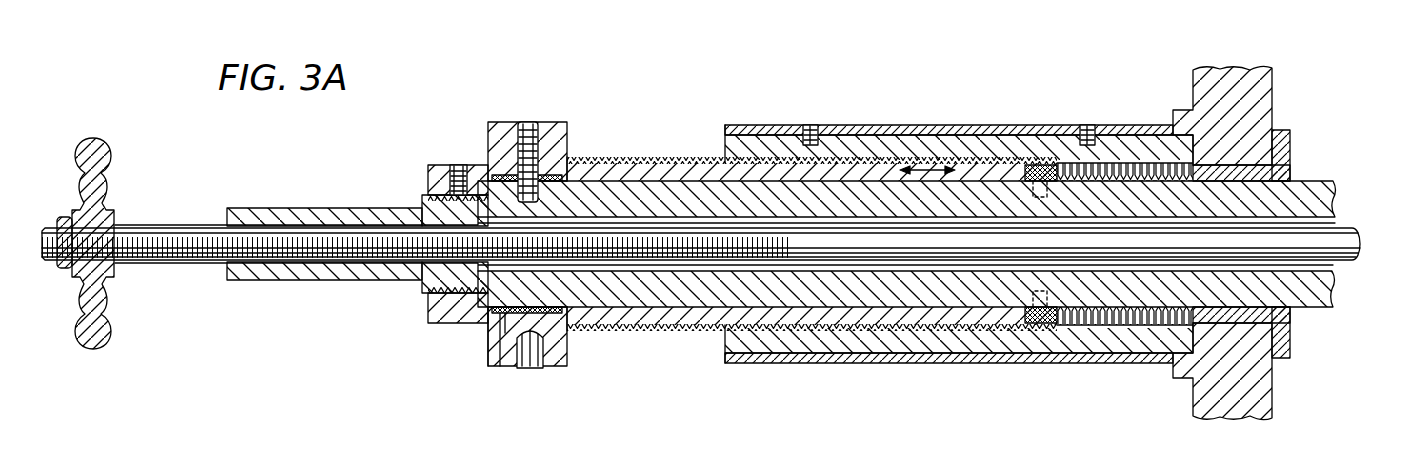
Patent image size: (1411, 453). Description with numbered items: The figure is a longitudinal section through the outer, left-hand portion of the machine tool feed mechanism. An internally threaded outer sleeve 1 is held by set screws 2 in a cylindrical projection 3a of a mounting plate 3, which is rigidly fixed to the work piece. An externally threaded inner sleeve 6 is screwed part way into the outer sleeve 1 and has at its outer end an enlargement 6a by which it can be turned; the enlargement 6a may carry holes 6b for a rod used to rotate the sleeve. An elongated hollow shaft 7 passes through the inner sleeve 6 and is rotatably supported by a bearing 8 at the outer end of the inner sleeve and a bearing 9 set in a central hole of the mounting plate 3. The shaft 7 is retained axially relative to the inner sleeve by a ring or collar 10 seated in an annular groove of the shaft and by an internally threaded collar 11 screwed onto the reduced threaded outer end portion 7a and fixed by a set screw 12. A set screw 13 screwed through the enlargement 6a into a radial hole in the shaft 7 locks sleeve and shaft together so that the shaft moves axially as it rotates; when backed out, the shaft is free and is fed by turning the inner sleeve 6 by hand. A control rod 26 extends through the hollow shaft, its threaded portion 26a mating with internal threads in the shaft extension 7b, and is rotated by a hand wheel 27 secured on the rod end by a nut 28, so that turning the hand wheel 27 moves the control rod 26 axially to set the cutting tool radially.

The outer sleeve 1 is at (876, 134).
The set screws 2 is at (811, 124).
The mounting plate 3 is at (1193, 82).
The cylindrical projection 3a is at (938, 124).
The inner sleeve 6 is at (626, 330).
The enlargement 6a is at (502, 370).
The holes 6b is at (533, 370).
The hollow shaft 7 is at (655, 310).
The reduced threaded outer end portion 7a is at (424, 290).
The extension of the shaft 7b is at (268, 282).
The bearing 8 is at (487, 347).
The bearing 9 is at (1292, 334).
The ring or collar 10 is at (1030, 324).
The internally threaded collar 11 is at (428, 170).
The set screw 12 is at (455, 166).
The set screw 13 is at (522, 124).
The control rod 26 is at (1344, 223).
The threaded portion of the control rod 26a is at (178, 208).
The hand wheel 27 is at (106, 143).
The nut 28 is at (60, 215).